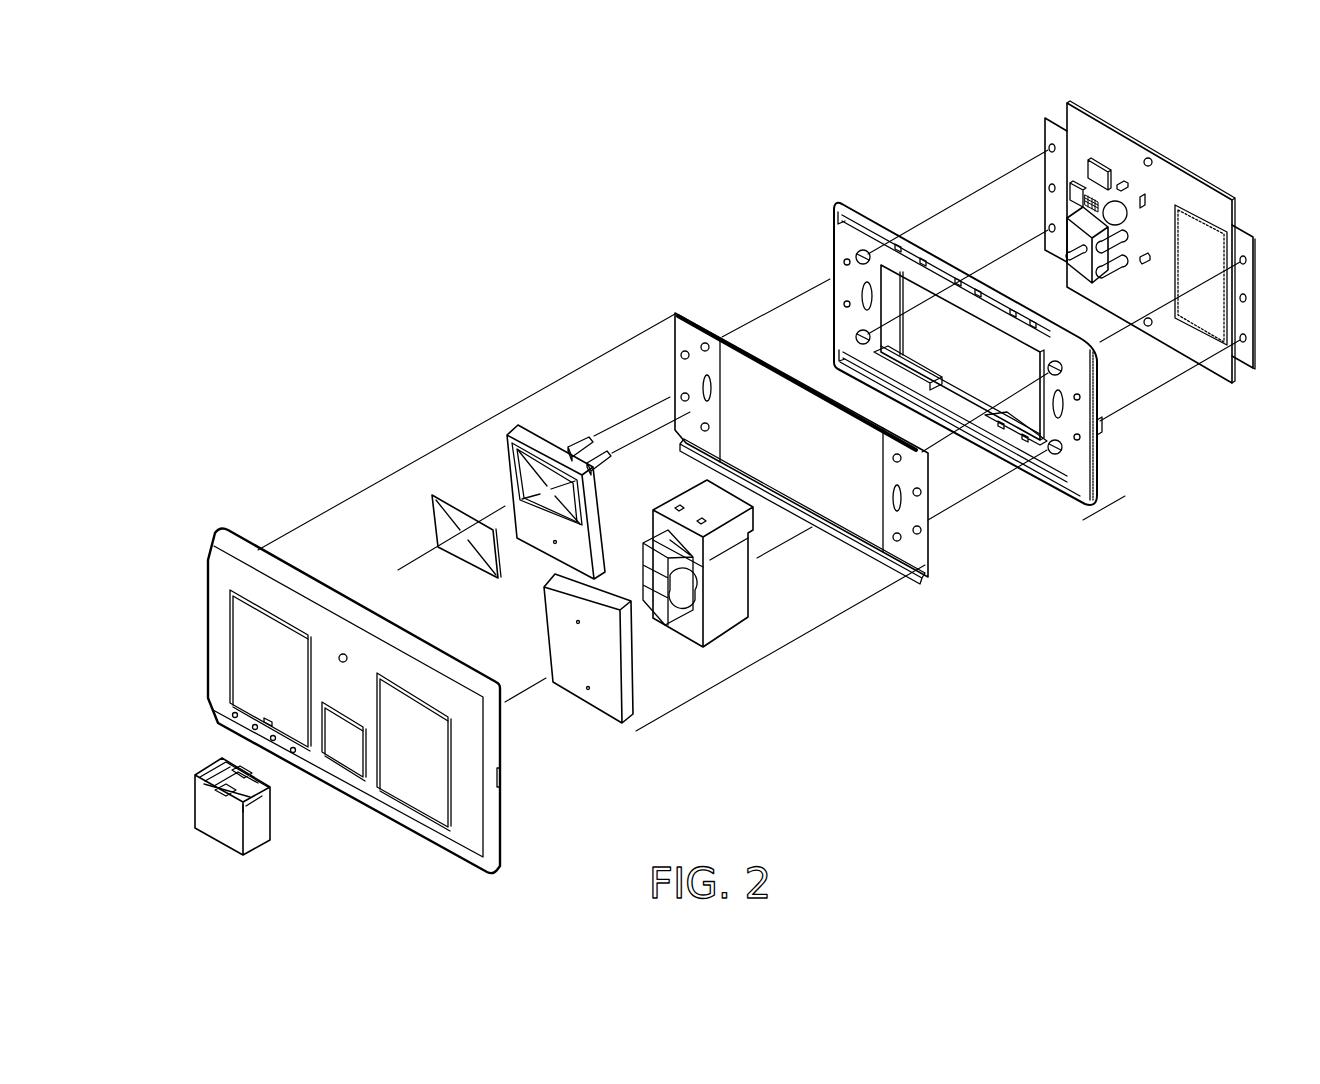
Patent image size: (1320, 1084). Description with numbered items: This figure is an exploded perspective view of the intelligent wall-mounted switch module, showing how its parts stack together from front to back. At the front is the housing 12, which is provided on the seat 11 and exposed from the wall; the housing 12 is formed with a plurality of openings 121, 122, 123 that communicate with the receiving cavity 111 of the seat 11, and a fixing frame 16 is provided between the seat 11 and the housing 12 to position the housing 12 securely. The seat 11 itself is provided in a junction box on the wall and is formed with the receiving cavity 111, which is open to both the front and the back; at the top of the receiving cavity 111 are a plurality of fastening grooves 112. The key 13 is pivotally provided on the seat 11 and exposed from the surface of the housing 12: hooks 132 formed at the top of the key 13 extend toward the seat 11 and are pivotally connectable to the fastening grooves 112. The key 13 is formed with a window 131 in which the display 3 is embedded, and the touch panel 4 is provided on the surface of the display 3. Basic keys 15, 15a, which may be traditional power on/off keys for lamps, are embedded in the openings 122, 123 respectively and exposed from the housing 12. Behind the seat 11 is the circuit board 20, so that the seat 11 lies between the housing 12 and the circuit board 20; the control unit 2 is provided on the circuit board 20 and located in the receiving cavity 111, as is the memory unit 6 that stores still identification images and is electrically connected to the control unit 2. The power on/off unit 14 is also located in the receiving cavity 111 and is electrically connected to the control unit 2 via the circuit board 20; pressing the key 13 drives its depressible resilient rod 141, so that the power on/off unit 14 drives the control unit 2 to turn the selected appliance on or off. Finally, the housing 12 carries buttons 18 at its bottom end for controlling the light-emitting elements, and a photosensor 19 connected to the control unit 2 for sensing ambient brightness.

The control unit 2 is at (1110, 212).
The display 3 is at (518, 468).
The touch panel 4 is at (446, 535).
The memory unit 6 is at (1117, 242).
The seat 11 is at (991, 343).
The housing 12 is at (325, 701).
The key 13 is at (531, 479).
The power on/off unit 14 is at (1081, 271).
The basic key 15 is at (683, 640).
The basic key 15a is at (196, 805).
The fixing frame 16 is at (935, 550).
The button 18 is at (228, 718).
The photosensor 19 is at (338, 655).
The circuit board 20 is at (1224, 188).
The receiving cavity 111 is at (935, 322).
The fastening grooves 112 is at (905, 243).
The opening 121 is at (253, 660).
The opening 122 is at (410, 785).
The opening 123 is at (345, 770).
The window 131 is at (515, 497).
The hooks 132 is at (580, 440).
The resilient rod 141 is at (1065, 256).